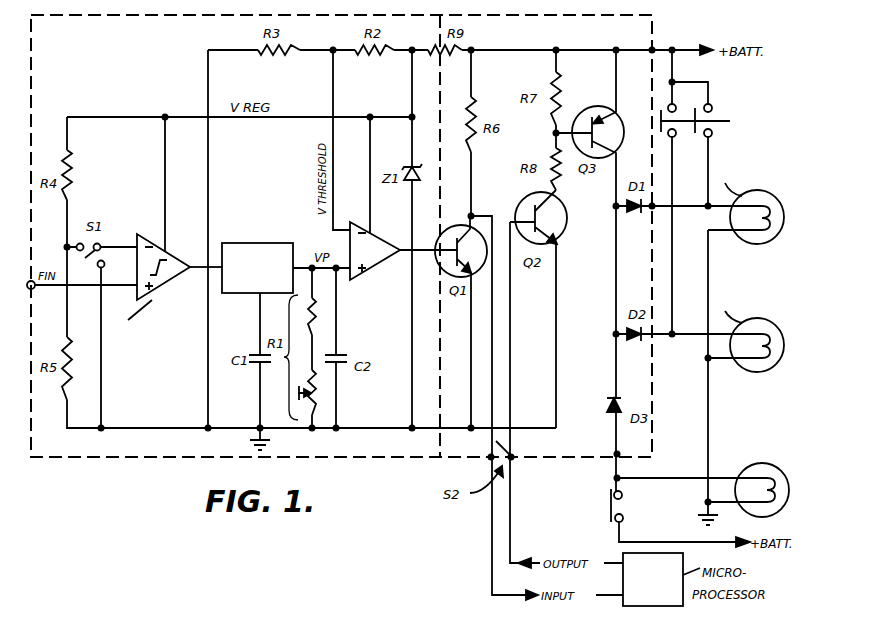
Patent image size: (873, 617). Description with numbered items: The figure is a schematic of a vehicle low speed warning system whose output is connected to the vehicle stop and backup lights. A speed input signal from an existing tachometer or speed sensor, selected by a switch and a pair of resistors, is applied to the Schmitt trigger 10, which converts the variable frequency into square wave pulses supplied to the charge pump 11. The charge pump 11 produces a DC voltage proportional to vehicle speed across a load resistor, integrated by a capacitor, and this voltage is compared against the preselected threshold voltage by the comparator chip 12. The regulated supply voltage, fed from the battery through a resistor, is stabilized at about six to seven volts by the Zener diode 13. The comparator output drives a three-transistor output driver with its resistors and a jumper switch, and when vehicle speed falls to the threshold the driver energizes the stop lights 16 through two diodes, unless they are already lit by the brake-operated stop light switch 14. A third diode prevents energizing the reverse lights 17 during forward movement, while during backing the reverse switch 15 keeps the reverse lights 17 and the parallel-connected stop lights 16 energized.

The Schmitt trigger 10 is at (171, 279).
The charge pump 11 is at (238, 243).
The comparator chip 12 is at (364, 273).
The Zener diode 13 is at (421, 181).
The brake-operated stop light switch 14 is at (718, 112).
The reverse switch 15 is at (612, 506).
The stop lights 16 is at (779, 333).
The reverse lights 17 is at (785, 471).